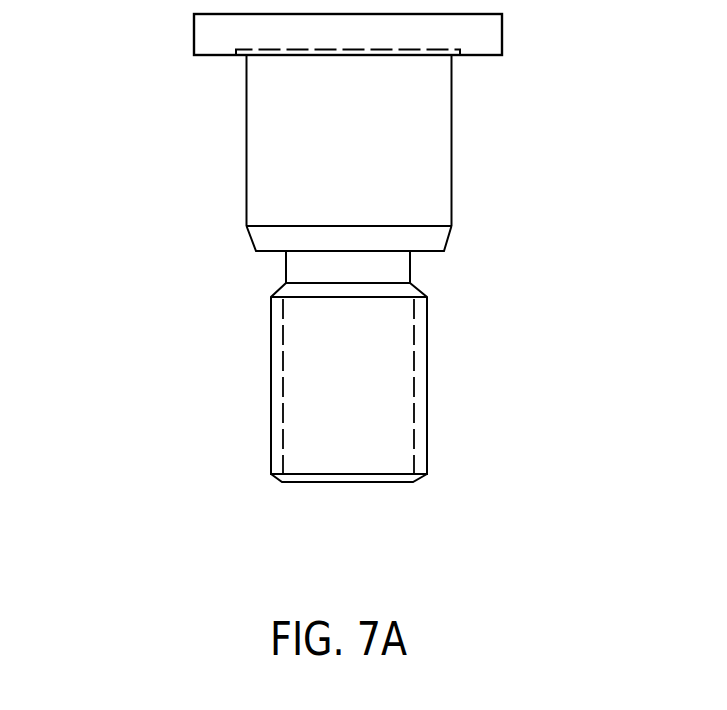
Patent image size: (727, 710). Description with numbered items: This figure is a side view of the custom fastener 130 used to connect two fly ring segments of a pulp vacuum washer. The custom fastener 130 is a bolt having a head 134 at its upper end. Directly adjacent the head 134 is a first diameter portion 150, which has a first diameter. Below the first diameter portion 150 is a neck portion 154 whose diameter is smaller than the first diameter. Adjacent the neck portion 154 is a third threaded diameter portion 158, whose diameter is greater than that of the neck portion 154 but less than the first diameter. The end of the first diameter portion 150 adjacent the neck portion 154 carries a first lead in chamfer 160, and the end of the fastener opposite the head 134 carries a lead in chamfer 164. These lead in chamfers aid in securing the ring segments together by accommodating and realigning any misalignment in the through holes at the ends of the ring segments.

The custom fastener 130 is at (110, 166).
The head 134 is at (486, 42).
The first diameter portion 150 is at (260, 163).
The neck portion 154 is at (302, 266).
The third threaded diameter portion 158 is at (290, 382).
The first lead in chamfer 160 is at (260, 235).
The lead in chamfer 164 is at (277, 482).